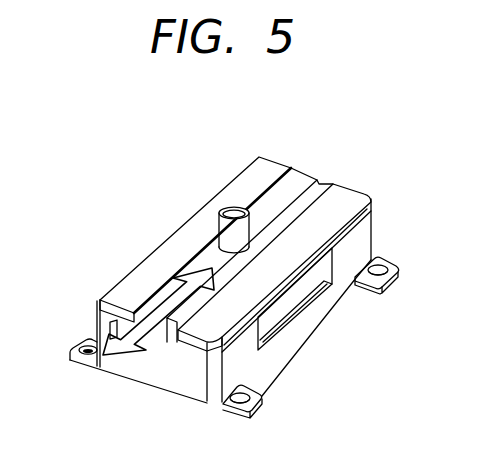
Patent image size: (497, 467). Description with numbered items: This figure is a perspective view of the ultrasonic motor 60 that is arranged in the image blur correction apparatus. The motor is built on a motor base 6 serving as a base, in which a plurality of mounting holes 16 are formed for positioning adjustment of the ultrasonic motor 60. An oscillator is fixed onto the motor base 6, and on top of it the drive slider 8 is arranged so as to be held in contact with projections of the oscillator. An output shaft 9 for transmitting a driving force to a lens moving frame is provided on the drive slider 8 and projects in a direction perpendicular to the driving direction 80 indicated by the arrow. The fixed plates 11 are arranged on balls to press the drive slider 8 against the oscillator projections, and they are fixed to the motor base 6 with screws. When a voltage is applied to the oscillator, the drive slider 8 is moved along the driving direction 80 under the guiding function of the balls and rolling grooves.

The ultrasonic motor 60 is at (104, 196).
The motor base 6 is at (360, 243).
The fixed plates 11 is at (248, 173).
The drive slider 8 is at (303, 188).
The output shaft 9 is at (234, 210).
The mounting holes 16 is at (89, 349).
The driving direction 80 is at (122, 356).